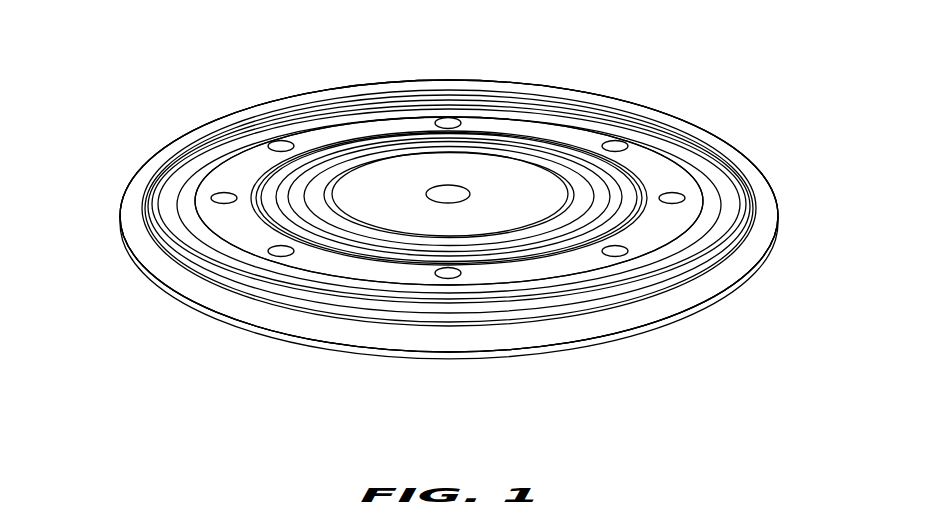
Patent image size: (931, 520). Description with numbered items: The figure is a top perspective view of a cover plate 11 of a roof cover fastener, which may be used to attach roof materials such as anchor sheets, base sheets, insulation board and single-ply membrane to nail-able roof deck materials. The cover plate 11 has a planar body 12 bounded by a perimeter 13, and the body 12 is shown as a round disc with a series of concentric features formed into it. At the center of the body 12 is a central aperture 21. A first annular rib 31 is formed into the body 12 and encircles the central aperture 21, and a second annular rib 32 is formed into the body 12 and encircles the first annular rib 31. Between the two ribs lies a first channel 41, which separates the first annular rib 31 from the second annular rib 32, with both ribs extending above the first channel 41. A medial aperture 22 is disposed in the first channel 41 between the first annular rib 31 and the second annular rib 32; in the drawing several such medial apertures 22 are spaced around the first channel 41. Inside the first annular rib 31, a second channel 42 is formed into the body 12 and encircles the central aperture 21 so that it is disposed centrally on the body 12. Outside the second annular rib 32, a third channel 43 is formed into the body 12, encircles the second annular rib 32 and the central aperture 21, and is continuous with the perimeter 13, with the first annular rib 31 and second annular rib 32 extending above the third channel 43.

The cover plate 11 is at (98, 60).
The planar body 12 is at (780, 237).
The perimeter 13 is at (357, 352).
The central aperture 21 is at (460, 190).
The medial aperture 22 is at (273, 143).
The first annular rib 31 is at (288, 193).
The second annular rib 32 is at (186, 196).
The first channel 41 is at (538, 270).
The second channel 42 is at (404, 172).
The third channel 43 is at (170, 275).